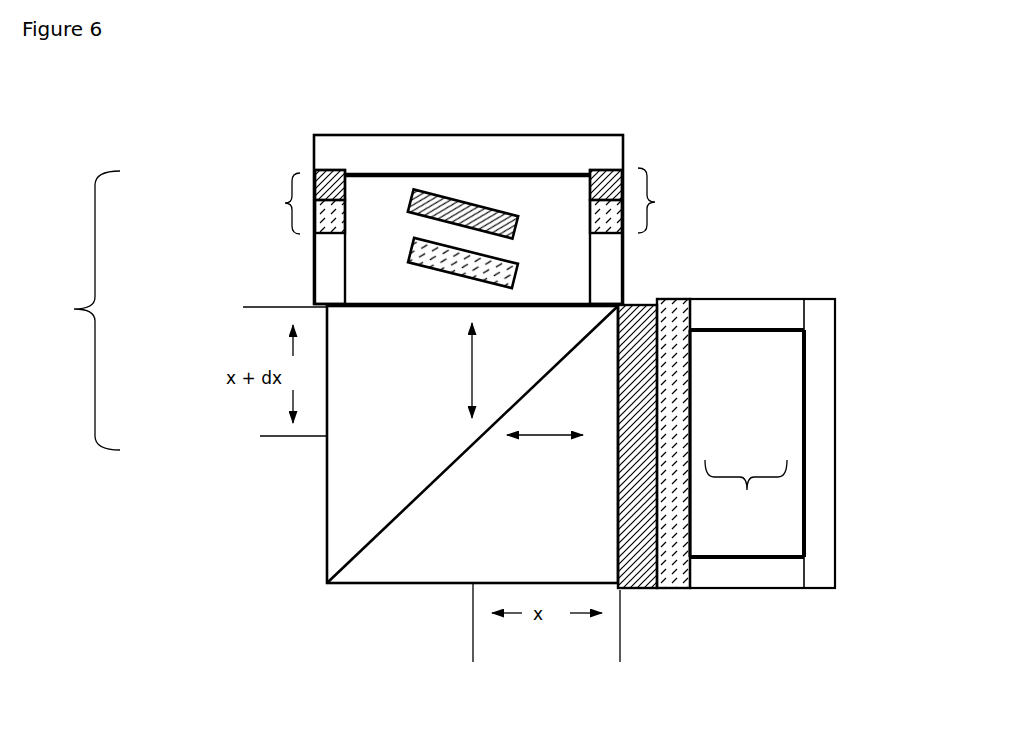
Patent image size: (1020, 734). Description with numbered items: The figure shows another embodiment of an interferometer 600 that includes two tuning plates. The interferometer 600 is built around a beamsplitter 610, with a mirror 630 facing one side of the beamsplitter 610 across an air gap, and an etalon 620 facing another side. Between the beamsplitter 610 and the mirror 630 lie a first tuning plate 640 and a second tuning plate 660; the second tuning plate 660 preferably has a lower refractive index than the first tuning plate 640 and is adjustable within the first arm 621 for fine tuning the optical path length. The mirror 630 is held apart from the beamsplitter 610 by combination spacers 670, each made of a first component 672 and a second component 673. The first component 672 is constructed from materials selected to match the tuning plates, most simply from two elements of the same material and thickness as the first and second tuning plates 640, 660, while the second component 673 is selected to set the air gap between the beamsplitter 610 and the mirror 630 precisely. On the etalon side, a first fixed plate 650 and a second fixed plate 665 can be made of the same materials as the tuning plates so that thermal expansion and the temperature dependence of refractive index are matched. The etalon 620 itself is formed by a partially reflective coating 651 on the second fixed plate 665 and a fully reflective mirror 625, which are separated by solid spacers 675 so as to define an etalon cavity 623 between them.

The interferometer 600 is at (417, 108).
The beamsplitter 610 is at (308, 600).
The etalon 620 is at (837, 425).
The first arm 621 is at (70, 310).
The etalon cavity 623 is at (746, 491).
The fully reflective mirror 625 is at (835, 298).
The mirror 630 is at (318, 135).
The first tuning plate 640 is at (447, 197).
The first fixed plate 650 is at (623, 592).
The partially reflective coating 651 is at (693, 425).
The second tuning plate 660 is at (513, 260).
The second fixed plate 665 is at (672, 590).
The combination spacers 670 is at (218, 203).
The first component 672 is at (284, 201).
The second component 673 is at (335, 284).
The solid spacers 675 is at (727, 318).